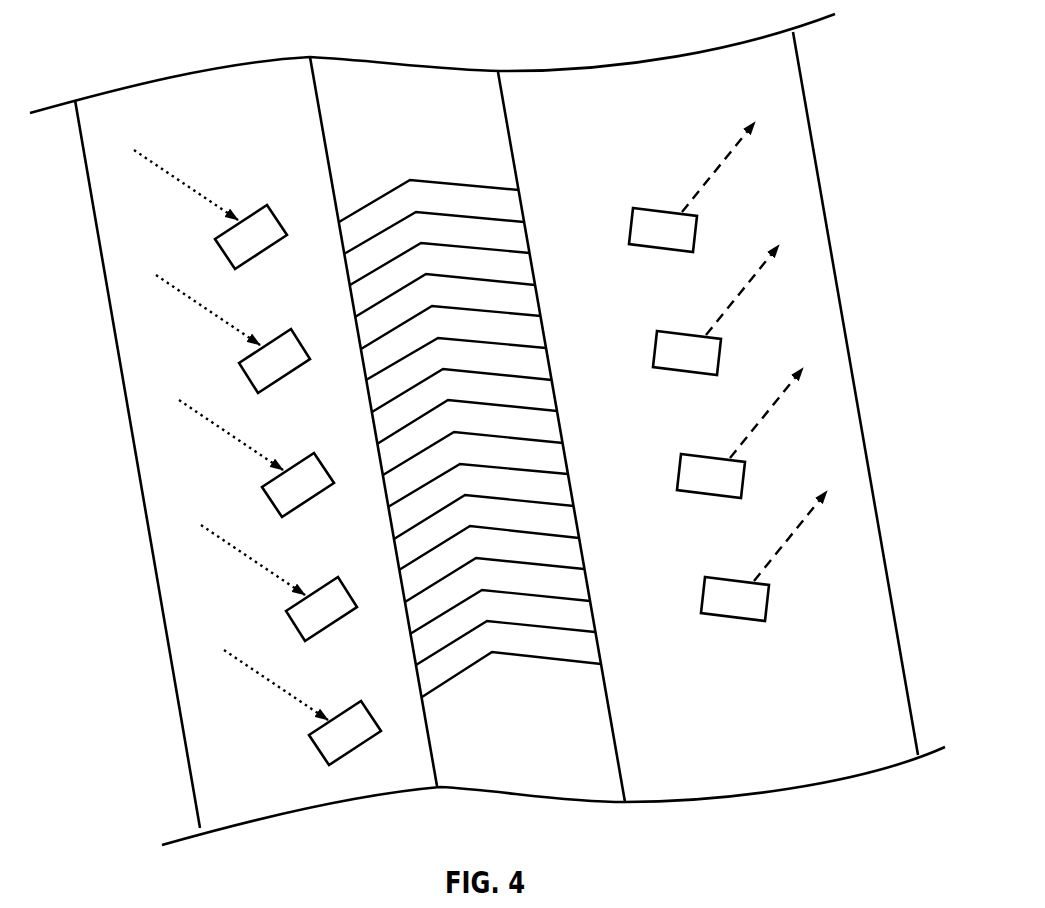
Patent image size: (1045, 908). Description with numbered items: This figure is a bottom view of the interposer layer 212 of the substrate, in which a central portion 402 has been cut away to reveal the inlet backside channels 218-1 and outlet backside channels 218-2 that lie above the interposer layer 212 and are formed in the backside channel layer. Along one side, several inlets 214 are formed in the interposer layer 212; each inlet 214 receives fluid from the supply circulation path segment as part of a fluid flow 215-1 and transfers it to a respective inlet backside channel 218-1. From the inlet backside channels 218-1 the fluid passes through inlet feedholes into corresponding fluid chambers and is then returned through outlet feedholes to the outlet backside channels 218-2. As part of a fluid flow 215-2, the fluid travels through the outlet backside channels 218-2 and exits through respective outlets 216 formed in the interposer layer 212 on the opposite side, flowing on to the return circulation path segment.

The interposer layer 212 is at (572, 87).
The inlet 214 is at (218, 248).
The fluid flow 215-1 is at (208, 207).
The fluid flow 215-2 is at (705, 180).
The outlet 216 is at (693, 238).
The inlet backside channel 218-1 is at (522, 250).
The outlet backside channel 218-2 is at (510, 188).
The central portion 402 is at (603, 736).